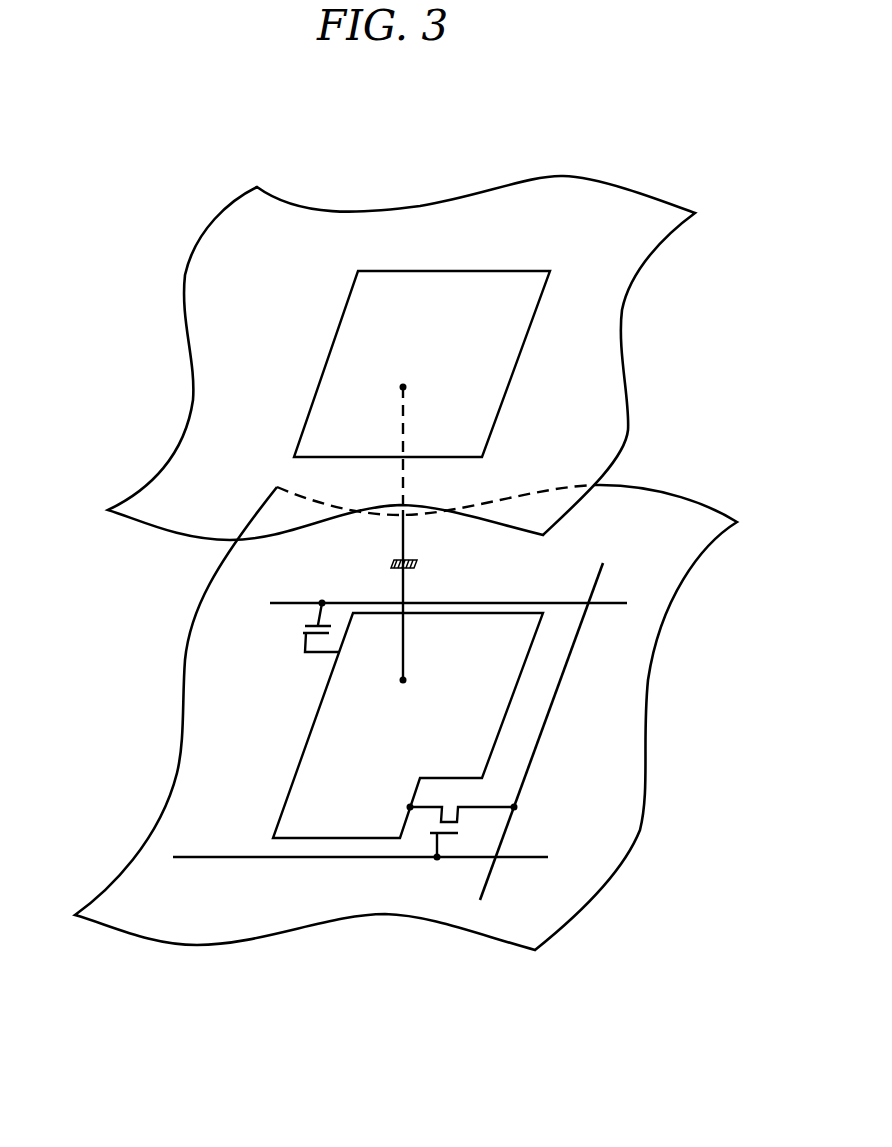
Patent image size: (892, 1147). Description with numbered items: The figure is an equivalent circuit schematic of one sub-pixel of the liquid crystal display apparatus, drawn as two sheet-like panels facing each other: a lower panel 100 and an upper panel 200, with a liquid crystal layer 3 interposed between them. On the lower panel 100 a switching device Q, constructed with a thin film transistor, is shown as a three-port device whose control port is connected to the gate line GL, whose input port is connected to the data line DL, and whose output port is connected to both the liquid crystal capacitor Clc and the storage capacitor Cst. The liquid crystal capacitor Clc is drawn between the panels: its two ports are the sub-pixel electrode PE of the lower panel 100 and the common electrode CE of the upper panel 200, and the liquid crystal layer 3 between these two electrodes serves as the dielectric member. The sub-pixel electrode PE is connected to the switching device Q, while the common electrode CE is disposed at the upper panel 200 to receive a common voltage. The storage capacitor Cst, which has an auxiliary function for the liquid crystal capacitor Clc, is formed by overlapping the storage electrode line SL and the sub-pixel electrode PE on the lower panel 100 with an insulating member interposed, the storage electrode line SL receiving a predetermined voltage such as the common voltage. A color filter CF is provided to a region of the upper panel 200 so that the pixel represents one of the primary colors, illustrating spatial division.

The liquid crystal layer 3 is at (105, 617).
The lower panel 100 is at (648, 695).
The upper panel 200 is at (628, 387).
The common electrode CE is at (621, 330).
The color filter CF is at (511, 377).
The sub-pixel electrode PE is at (307, 740).
The storage electrode line SL is at (451, 622).
The data line DL is at (551, 716).
The gate line GL is at (365, 841).
The switching device Q is at (404, 815).
The storage capacitor Cst is at (297, 626).
The liquid crystal capacitor Clc is at (425, 534).